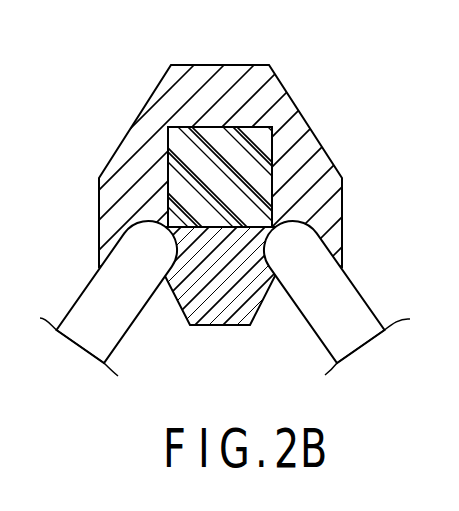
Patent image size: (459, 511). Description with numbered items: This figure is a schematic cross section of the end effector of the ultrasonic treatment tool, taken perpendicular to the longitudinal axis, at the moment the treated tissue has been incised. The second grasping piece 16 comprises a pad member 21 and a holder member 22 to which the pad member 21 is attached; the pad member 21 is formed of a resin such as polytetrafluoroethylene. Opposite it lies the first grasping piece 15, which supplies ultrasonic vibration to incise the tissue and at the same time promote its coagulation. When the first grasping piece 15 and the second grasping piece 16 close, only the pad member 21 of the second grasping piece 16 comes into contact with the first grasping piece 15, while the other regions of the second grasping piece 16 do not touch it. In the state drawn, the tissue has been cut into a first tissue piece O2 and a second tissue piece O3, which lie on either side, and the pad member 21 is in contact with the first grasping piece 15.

The second grasping piece 16 is at (313, 109).
The holder member 22 is at (320, 161).
The pad member 21 is at (218, 152).
The first grasping piece 15 is at (220, 318).
The first tissue piece O2 is at (92, 292).
The second tissue piece O3 is at (340, 290).